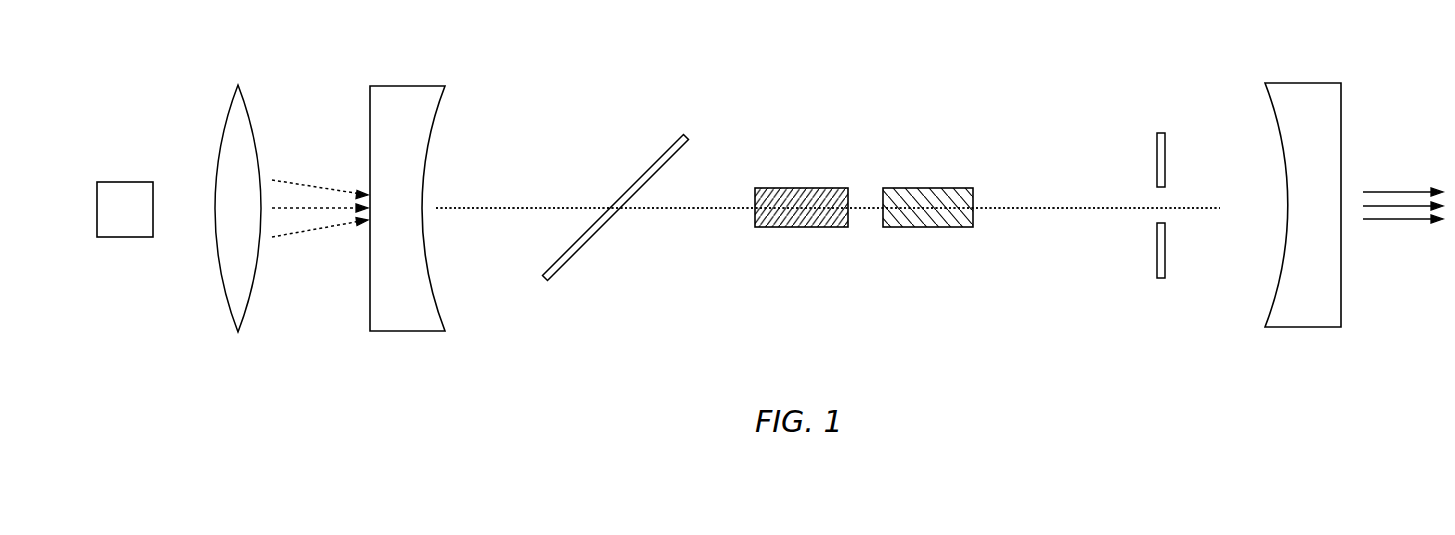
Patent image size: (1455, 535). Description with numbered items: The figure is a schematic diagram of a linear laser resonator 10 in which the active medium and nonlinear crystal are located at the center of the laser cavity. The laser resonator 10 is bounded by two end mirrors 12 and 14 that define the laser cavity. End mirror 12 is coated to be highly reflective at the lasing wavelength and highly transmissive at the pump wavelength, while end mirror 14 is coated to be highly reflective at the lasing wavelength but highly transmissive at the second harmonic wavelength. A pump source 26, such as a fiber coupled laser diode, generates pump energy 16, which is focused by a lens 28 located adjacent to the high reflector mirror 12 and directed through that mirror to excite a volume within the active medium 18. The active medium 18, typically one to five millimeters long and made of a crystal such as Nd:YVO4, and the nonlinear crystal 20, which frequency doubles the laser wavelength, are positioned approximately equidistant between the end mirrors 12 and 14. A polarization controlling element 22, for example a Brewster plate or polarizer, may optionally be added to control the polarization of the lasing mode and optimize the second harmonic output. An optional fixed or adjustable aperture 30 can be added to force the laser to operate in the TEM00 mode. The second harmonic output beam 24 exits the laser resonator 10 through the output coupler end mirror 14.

The laser resonator 10 is at (915, 300).
The end mirror 12 is at (408, 86).
The end mirror 14 is at (1310, 83).
The pump energy 16 is at (317, 182).
The active medium 18 is at (802, 188).
The nonlinear crystal 20 is at (928, 188).
The polarization controlling element 22 is at (677, 135).
The second harmonic output beam 24 is at (1397, 182).
The pump source 26 is at (123, 182).
The lens 28 is at (238, 85).
The aperture 30 is at (1162, 133).